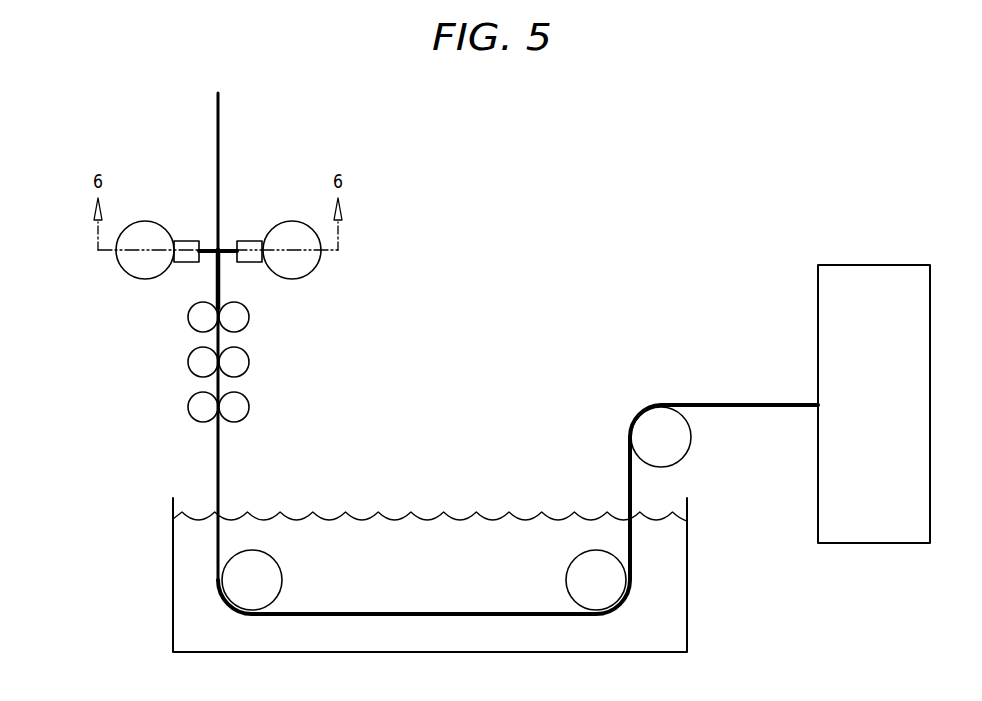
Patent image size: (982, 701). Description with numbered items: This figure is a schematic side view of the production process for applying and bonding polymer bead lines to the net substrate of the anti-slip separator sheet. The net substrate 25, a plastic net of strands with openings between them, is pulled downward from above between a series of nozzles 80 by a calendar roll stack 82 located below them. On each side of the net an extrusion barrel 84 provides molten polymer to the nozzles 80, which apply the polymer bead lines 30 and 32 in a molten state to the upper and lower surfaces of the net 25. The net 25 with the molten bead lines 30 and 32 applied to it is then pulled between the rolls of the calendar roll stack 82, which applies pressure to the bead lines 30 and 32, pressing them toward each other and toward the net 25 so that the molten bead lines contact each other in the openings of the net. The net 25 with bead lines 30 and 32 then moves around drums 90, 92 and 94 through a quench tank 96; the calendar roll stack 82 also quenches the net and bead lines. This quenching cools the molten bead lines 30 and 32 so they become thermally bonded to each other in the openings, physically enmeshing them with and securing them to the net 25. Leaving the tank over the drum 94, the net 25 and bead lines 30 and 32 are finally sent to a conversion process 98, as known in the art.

The net substrate 25 is at (218, 123).
The polymer bead line 30 is at (222, 283).
The polymer bead line 32 is at (214, 281).
The nozzles 80 is at (186, 240).
The calendar roll stack 82 is at (246, 318).
The extrusion barrel 84 is at (150, 232).
The drum 90 is at (237, 566).
The drum 92 is at (596, 562).
The drum 94 is at (641, 433).
The quench tank 96 is at (672, 573).
The conversion process 98 is at (818, 340).